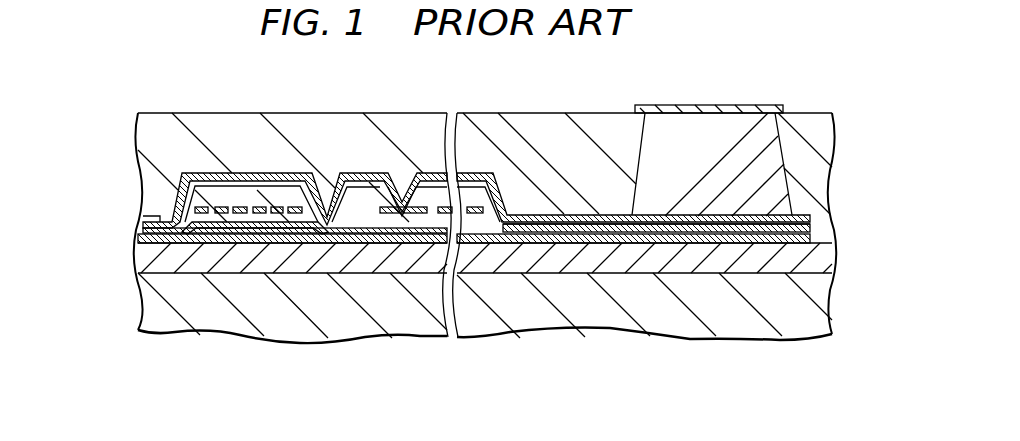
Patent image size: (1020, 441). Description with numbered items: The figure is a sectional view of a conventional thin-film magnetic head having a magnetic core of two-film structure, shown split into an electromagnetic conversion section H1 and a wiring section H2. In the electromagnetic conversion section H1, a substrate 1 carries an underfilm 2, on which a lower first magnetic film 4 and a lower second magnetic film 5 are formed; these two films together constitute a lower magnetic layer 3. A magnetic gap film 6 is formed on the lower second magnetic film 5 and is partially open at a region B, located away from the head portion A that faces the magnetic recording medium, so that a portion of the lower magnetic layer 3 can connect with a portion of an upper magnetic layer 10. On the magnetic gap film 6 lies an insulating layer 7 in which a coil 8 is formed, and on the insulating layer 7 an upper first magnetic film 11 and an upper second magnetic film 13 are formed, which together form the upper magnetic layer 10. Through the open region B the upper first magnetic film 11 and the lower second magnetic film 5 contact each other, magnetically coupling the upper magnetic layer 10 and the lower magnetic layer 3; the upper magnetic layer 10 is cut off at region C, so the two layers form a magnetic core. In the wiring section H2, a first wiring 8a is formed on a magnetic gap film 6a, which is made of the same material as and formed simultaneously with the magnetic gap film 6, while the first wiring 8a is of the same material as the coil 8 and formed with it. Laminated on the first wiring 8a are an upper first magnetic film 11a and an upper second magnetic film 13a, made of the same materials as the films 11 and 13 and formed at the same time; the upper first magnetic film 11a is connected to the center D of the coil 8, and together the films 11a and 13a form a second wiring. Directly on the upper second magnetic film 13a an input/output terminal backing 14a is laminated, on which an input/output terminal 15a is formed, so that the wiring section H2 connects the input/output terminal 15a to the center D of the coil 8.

The electromagnetic conversion section H1 is at (128, 110).
The wiring section H2 is at (842, 125).
The substrate 1 is at (335, 320).
The underfilm 2 is at (421, 270).
The lower magnetic layer 3 is at (271, 250).
The lower first magnetic film 4 is at (211, 243).
The lower second magnetic film 5 is at (248, 236).
The magnetic gap film 6 is at (212, 186).
The insulating layer 7 is at (316, 205).
The coil 8 is at (288, 182).
The upper magnetic layer 10 is at (268, 166).
The upper first magnetic film 11 is at (243, 178).
The upper second magnetic film 13 is at (188, 172).
The upper second magnetic film 13a is at (556, 228).
The upper first magnetic film 11a is at (604, 226).
The input/output terminal 15a is at (733, 111).
The input/output terminal backing 14a is at (762, 133).
The first wiring 8a is at (660, 240).
The magnetic gap film 6a is at (550, 243).
The head portion A is at (143, 220).
The open region B is at (341, 185).
The cut-off region C is at (380, 205).
The center of coil D is at (392, 255).